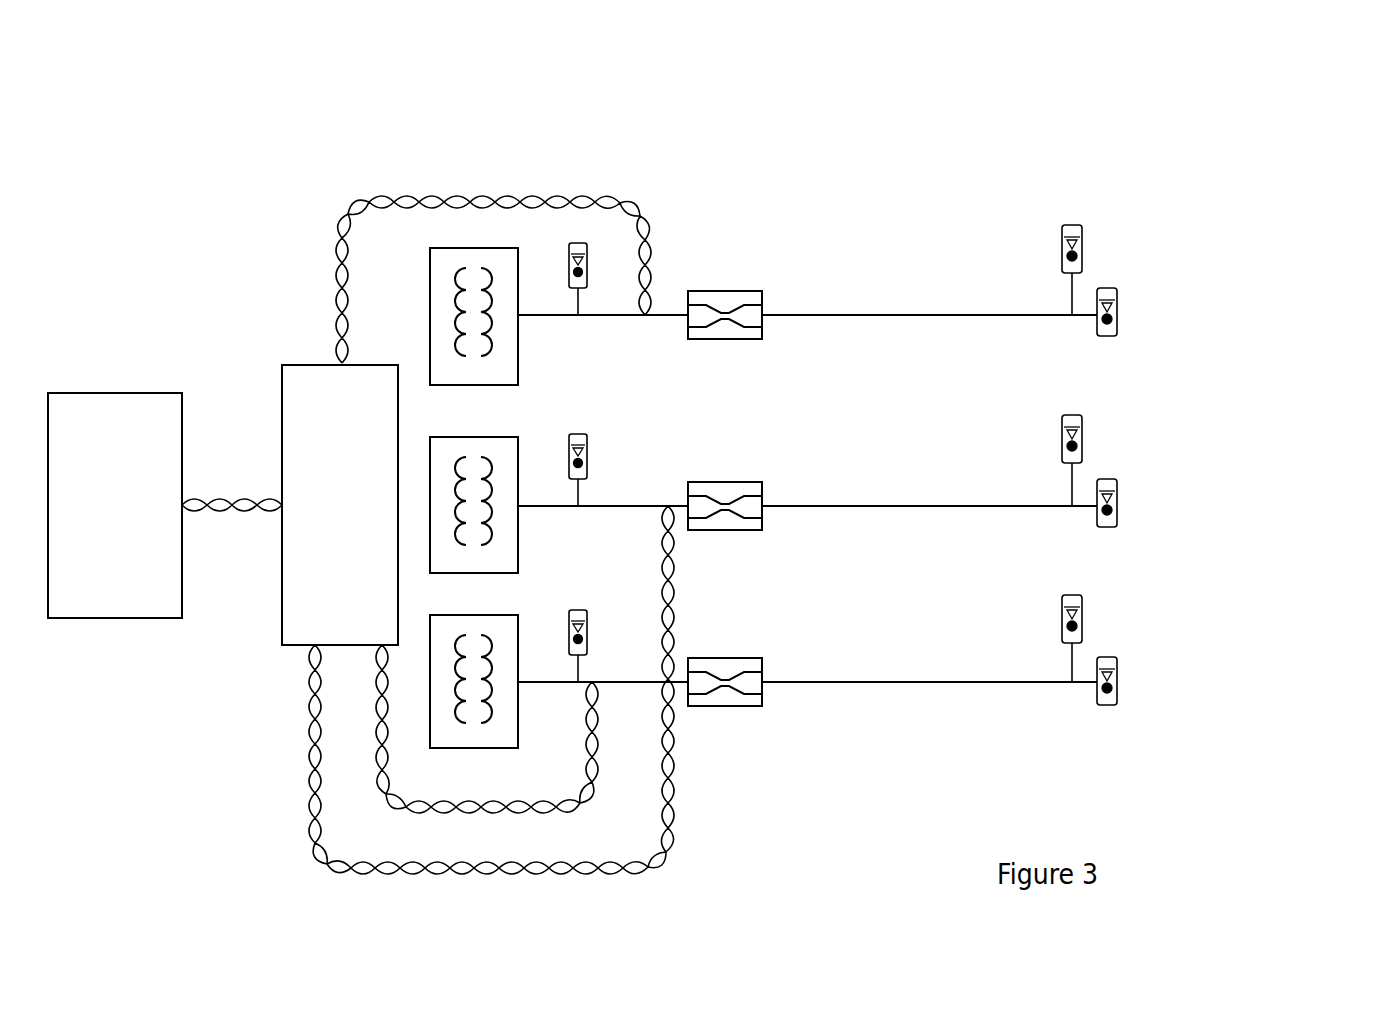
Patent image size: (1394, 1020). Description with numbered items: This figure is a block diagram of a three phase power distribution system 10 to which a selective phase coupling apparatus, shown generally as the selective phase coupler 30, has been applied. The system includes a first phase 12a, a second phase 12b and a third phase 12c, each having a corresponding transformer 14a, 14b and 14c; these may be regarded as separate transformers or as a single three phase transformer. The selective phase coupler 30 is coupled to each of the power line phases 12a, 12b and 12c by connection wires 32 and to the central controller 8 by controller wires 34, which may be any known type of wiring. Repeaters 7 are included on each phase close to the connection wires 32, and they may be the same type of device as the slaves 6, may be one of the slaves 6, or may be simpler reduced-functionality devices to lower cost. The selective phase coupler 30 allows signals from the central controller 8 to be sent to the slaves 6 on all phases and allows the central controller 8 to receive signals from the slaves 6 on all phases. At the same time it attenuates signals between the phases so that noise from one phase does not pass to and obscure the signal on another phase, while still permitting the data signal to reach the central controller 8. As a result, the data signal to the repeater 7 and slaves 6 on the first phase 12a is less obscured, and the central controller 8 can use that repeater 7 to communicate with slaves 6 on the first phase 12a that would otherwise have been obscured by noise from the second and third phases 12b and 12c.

The slaves 6 is at (1060, 244).
The repeaters 7 is at (589, 263).
The central controller 8 is at (119, 561).
The three phase power distribution system 10 is at (716, 456).
The first phase 12a is at (1212, 298).
The second phase 12b is at (1205, 475).
The third phase 12c is at (1188, 658).
The first transformer 14a is at (519, 341).
The second transformer 14b is at (519, 543).
The third transformer 14c is at (520, 712).
The selective phase coupler 30 is at (372, 574).
The connection wires 32 is at (388, 192).
The controller wires 34 is at (207, 500).